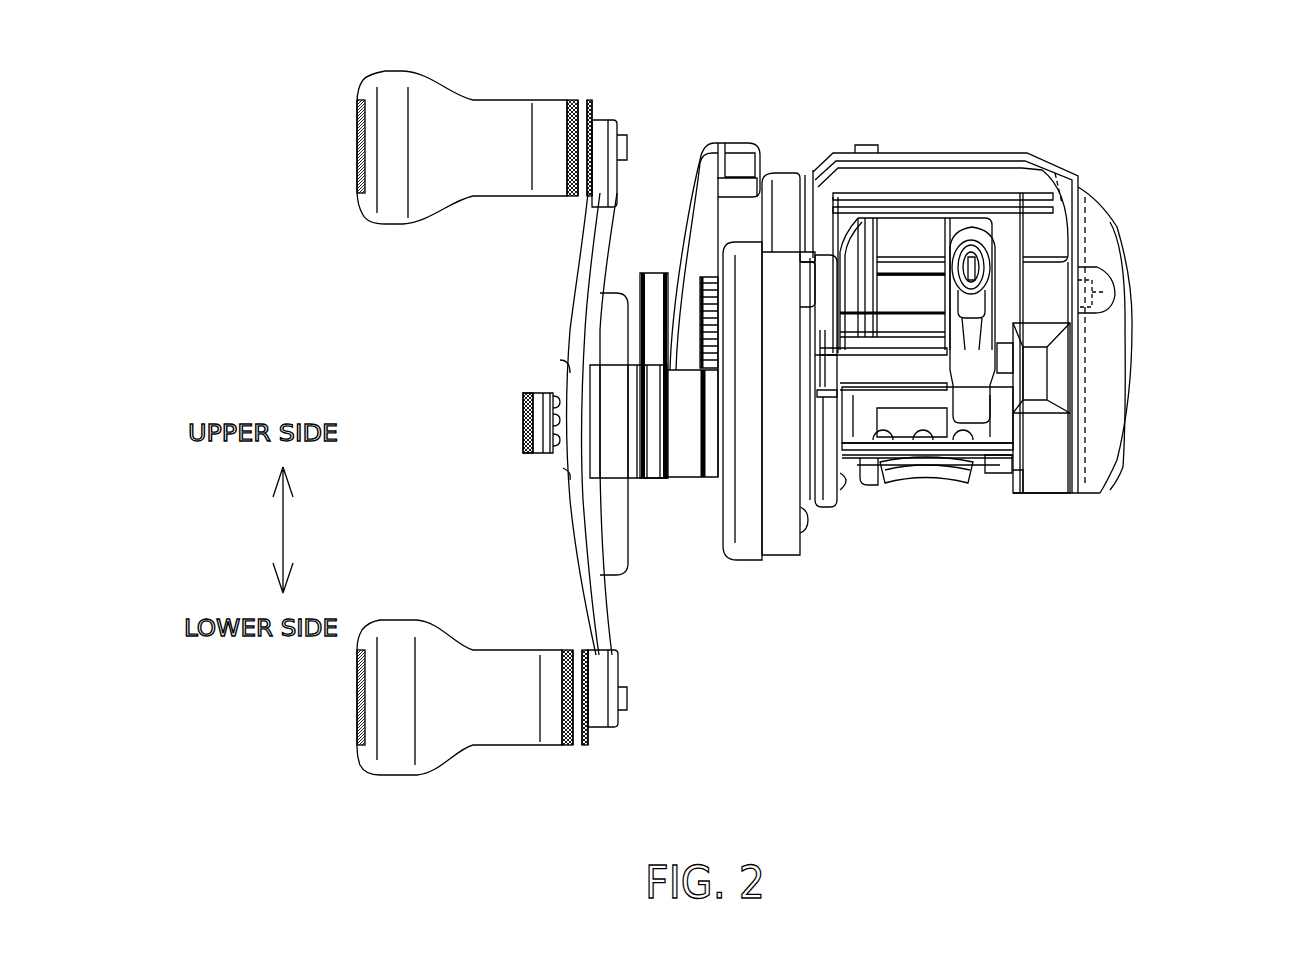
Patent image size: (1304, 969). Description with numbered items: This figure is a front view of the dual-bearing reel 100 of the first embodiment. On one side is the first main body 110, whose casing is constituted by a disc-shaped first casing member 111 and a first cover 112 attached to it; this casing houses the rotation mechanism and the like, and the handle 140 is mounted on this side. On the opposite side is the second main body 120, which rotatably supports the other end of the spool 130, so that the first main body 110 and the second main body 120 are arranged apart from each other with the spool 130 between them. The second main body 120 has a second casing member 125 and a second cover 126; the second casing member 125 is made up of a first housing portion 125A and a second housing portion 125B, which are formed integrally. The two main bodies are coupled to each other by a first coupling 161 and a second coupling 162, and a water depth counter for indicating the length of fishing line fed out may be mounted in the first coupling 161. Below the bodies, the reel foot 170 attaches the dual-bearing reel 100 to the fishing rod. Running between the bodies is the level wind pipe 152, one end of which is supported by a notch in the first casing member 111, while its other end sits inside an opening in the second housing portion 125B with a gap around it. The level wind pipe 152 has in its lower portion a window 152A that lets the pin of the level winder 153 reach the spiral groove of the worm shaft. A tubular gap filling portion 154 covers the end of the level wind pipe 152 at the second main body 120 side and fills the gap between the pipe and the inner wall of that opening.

The dual-bearing reel 100 is at (1147, 143).
The first main body 110 is at (663, 108).
The first casing member 111 is at (830, 443).
The first cover 112 is at (778, 483).
The second main body 120 is at (1157, 455).
The second casing member 125 is at (1195, 595).
The first housing portion 125A is at (1063, 468).
The second housing portion 125B is at (1047, 460).
The second cover 126 is at (1122, 402).
The spool 130 is at (900, 283).
The handle 140 is at (365, 200).
The level wind pipe 152 is at (918, 370).
The window 152A is at (867, 450).
The level winder 153 is at (970, 240).
The gap filling portion 154 is at (1010, 440).
The first coupling 161 is at (937, 175).
The second coupling 162 is at (868, 475).
The reel foot 170 is at (947, 463).